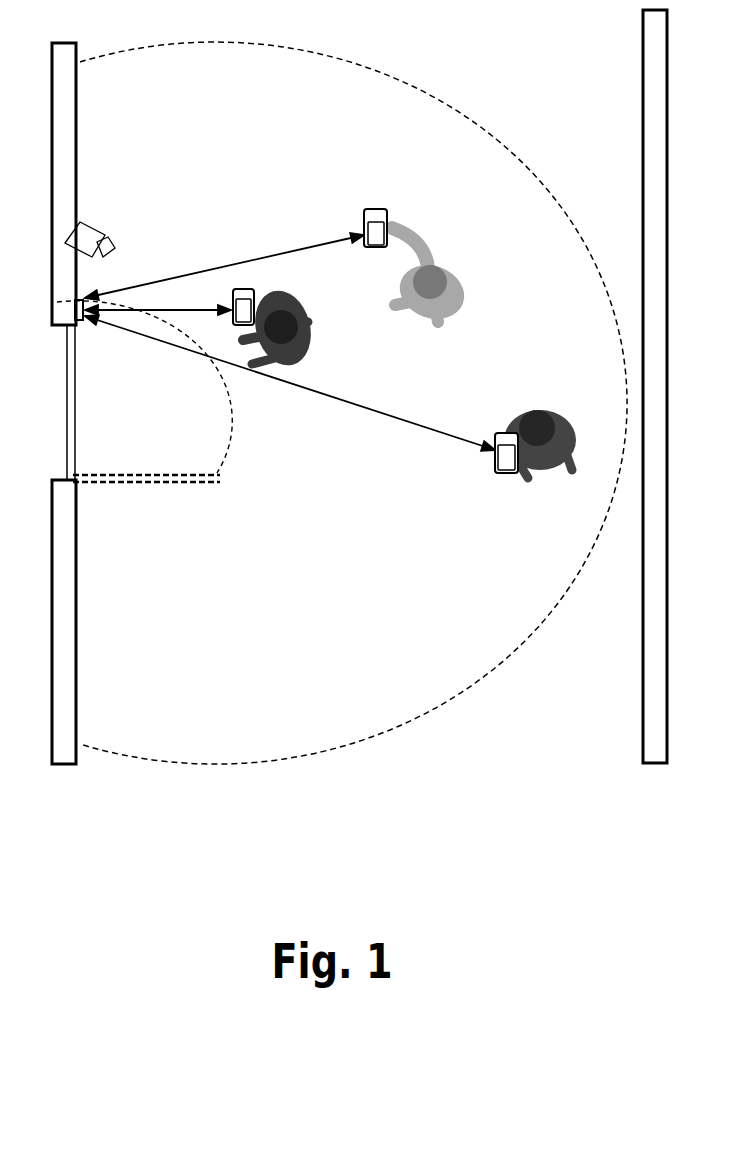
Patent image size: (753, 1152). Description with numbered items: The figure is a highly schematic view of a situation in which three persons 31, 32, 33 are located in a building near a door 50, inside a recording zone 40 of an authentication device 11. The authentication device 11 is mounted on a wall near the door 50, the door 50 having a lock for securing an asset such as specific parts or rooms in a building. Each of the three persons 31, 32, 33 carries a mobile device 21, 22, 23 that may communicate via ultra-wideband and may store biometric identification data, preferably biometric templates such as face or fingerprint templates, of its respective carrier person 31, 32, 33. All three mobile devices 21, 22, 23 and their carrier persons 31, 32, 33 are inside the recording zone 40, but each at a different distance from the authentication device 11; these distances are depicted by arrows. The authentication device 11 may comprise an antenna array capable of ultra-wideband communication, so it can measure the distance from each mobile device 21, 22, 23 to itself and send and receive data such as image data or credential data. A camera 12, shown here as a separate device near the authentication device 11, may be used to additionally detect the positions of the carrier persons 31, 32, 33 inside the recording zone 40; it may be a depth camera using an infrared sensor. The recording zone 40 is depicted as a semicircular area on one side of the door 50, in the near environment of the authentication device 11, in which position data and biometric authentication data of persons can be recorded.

The authentication device 11 is at (79, 298).
The camera 12 is at (90, 222).
The mobile device 21 is at (243, 289).
The mobile device 22 is at (375, 208).
The mobile device 23 is at (505, 476).
The person 31 is at (305, 352).
The person 32 is at (438, 240).
The person 33 is at (545, 392).
The recording zone 40 is at (415, 88).
The door 50 is at (147, 498).